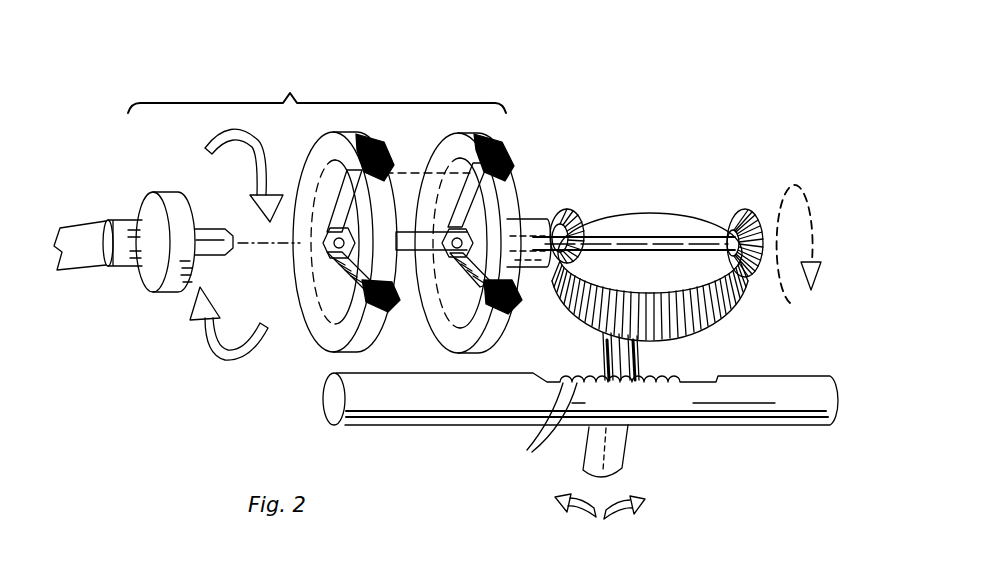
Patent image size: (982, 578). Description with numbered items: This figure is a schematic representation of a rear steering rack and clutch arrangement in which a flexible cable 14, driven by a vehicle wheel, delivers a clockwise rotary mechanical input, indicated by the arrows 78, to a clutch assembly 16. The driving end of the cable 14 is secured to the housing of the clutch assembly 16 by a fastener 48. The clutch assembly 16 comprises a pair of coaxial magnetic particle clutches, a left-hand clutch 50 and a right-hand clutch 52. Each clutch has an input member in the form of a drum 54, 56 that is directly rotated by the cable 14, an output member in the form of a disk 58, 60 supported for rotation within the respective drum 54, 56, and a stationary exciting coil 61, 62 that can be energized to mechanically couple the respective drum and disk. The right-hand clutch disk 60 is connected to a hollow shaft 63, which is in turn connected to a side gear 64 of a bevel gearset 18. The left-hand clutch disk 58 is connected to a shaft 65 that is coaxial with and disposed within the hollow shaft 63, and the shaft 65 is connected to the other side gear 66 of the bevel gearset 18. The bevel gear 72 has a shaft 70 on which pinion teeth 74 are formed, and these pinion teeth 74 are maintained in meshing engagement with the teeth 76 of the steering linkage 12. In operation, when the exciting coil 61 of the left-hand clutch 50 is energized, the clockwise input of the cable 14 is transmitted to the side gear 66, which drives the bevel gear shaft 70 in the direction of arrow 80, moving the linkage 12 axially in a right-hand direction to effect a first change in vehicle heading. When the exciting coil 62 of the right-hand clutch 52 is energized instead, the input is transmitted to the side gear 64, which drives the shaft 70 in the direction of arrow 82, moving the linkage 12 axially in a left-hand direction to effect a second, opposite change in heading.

The steering linkage 12 is at (775, 403).
The flexible cable 14 is at (76, 266).
The clutch assembly 16 is at (412, 138).
The bevel gearset 18 is at (720, 184).
The fastener 48 is at (170, 293).
The left-hand clutch 50 is at (351, 220).
The right-hand clutch 52 is at (485, 263).
The drum 54 is at (320, 330).
The drum 56 is at (463, 313).
The disk 58 is at (377, 211).
The disk 60 is at (500, 207).
The exciting coil 61 is at (380, 160).
The exciting coil 62 is at (476, 155).
The hollow shaft 63 is at (550, 217).
The side gear 64 is at (583, 224).
The shaft 65 is at (437, 258).
The side gear 66 is at (748, 280).
The bevel gear shaft 70 is at (623, 438).
The bevel gear 72 is at (717, 330).
The pinion teeth 74 is at (600, 370).
The teeth 76 is at (527, 450).
The arrows 78 is at (205, 144).
The arrow 80 is at (627, 521).
The arrow 82 is at (584, 518).